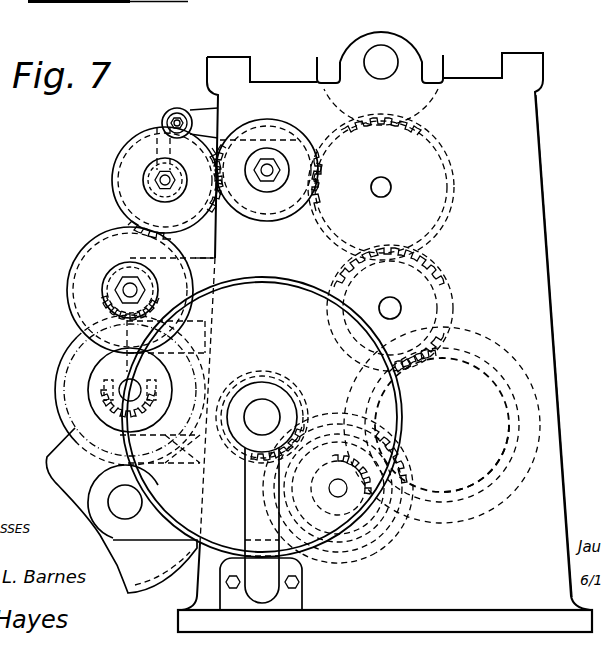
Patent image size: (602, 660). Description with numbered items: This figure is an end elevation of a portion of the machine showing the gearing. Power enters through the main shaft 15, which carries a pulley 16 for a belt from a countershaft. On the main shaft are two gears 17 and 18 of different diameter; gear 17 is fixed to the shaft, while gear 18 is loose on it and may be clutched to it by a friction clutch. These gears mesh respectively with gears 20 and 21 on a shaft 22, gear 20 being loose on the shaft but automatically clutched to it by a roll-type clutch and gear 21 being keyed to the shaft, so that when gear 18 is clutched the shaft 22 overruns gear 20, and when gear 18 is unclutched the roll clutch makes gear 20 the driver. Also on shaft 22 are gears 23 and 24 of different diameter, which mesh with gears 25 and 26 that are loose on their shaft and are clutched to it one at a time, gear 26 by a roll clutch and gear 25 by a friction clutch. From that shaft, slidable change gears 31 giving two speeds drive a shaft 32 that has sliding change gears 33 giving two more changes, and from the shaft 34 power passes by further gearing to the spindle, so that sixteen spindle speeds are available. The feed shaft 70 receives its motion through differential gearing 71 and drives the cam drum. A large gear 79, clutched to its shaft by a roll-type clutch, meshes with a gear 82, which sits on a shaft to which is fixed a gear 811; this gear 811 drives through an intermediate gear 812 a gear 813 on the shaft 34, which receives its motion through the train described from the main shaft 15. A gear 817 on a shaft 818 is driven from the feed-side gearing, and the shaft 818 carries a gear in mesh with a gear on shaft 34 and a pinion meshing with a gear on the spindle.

The main shaft 15 is at (262, 417).
The pulley 16 is at (259, 280).
The gear 17 is at (301, 395).
The gear 18 is at (297, 379).
The gear 20 is at (352, 412).
The gear 21 is at (308, 443).
The shaft 22 is at (370, 549).
The gear 23 is at (392, 529).
The gear 24 is at (329, 563).
The gear 25 is at (517, 364).
The gear 26 is at (511, 468).
The slidable change gears 31 is at (498, 342).
The shaft 32 is at (398, 305).
The sliding change gears 33 is at (440, 319).
The shaft 34 is at (384, 182).
The feed shaft 70 is at (122, 501).
The differential gearing 71 is at (62, 452).
The gear 79 is at (57, 380).
The gear 82 is at (107, 307).
The gear 811 is at (136, 176).
The intermediate gear 812 is at (278, 122).
The gear 813 is at (447, 150).
The gear 817 is at (333, 60).
The shaft 818 is at (393, 52).